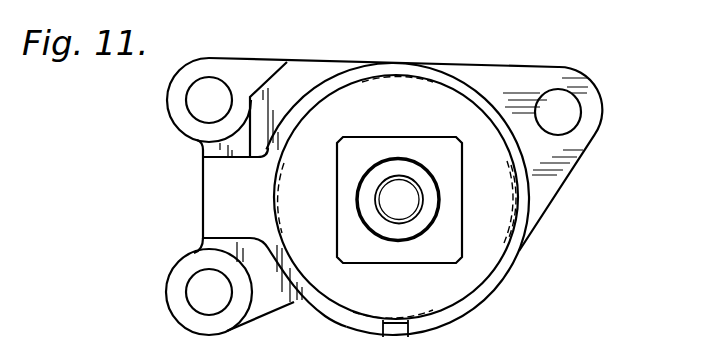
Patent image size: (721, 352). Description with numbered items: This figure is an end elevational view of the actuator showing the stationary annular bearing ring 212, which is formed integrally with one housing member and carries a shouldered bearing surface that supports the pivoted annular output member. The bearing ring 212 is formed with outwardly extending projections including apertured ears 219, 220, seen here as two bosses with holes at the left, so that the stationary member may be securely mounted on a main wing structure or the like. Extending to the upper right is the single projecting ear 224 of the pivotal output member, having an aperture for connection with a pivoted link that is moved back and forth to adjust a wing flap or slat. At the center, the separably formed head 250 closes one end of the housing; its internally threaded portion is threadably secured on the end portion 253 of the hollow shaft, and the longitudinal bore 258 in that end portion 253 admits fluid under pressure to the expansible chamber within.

The stationary annular bearing ring 212 is at (293, 77).
The apertured ear 219 is at (178, 105).
The apertured ear 220 is at (173, 301).
The projecting ear 224 is at (525, 77).
The head 250 is at (483, 262).
The end portion of the shaft 253 is at (400, 232).
The longitudinal bore 258 is at (397, 187).